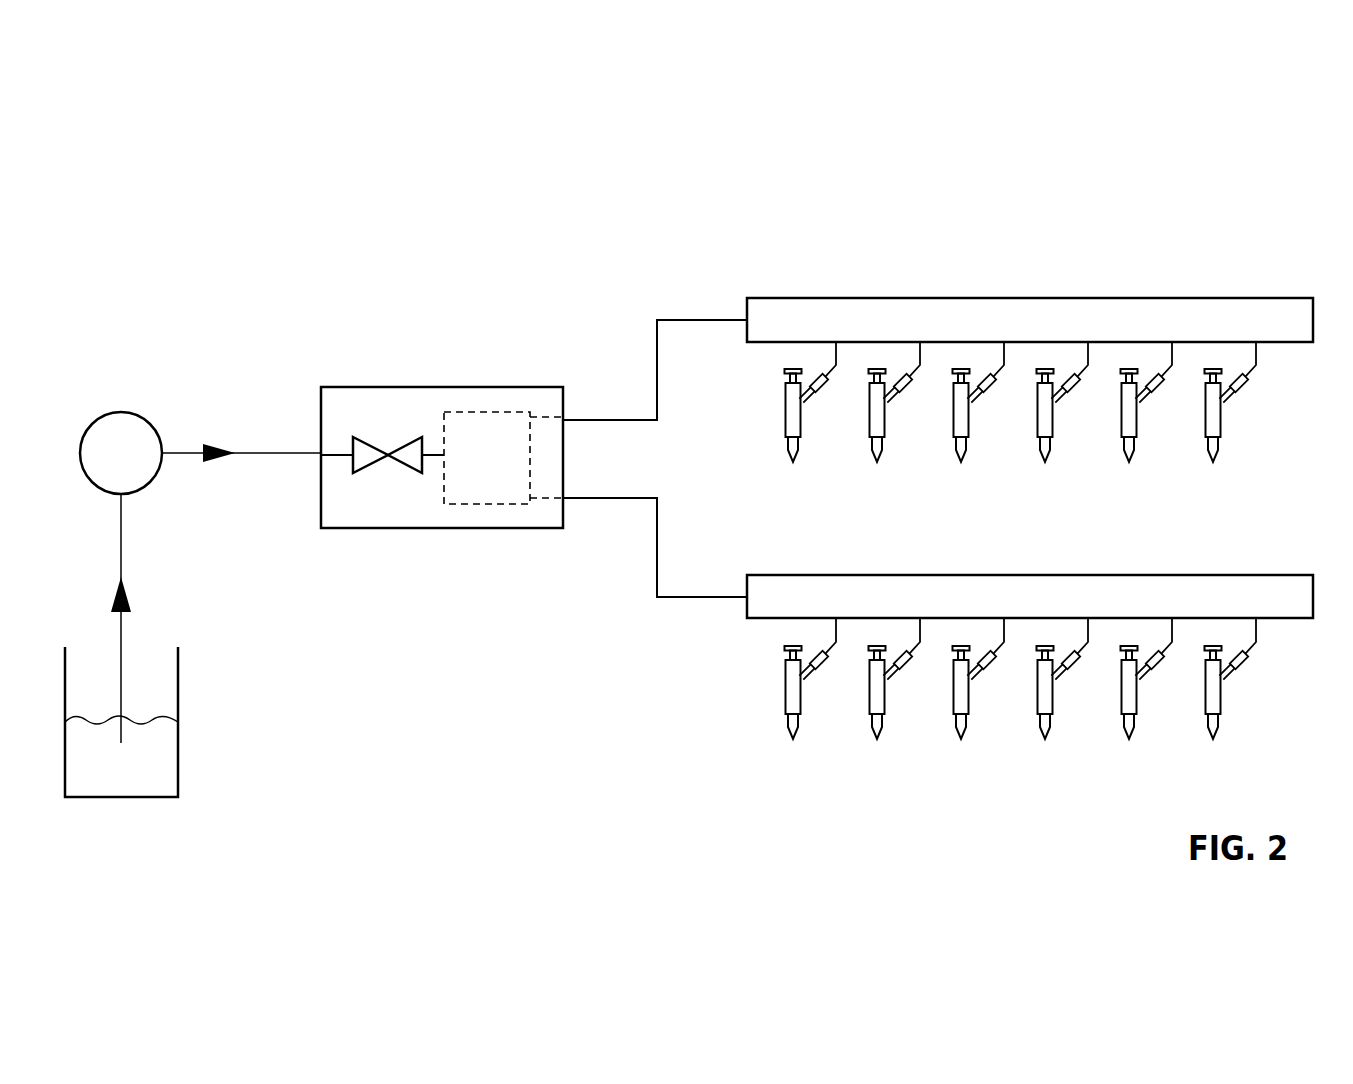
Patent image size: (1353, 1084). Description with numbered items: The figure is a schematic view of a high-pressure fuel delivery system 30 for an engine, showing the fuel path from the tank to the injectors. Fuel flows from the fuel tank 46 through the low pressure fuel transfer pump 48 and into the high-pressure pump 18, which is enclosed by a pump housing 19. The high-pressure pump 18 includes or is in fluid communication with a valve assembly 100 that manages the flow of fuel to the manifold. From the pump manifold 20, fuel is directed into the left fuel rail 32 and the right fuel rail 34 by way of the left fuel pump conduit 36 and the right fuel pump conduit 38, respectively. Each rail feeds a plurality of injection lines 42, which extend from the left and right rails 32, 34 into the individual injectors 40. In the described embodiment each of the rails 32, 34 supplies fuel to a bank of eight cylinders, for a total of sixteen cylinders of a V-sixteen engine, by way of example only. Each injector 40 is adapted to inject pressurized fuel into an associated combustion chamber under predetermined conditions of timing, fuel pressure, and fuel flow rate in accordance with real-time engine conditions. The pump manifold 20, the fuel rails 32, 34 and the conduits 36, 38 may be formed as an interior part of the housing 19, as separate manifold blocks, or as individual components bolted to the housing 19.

The high-pressure pump 18 is at (377, 383).
The pump housing 19 is at (366, 530).
The pump manifold 20 is at (472, 488).
The valve assembly 100 is at (388, 455).
The high-pressure fuel delivery system 30 is at (1150, 229).
The left fuel rail 32 is at (1097, 600).
The right fuel rail 34 is at (1047, 317).
The left fuel pump conduit 36 is at (657, 557).
The right fuel pump conduit 38 is at (708, 319).
The fuel injector 40 is at (873, 443).
The injection line 42 is at (1001, 385).
The fuel tank 46 is at (152, 760).
The low pressure fuel transfer pump 48 is at (133, 460).